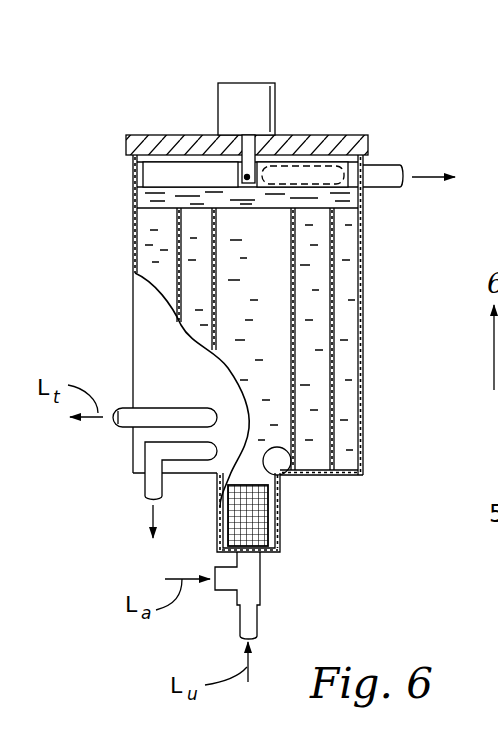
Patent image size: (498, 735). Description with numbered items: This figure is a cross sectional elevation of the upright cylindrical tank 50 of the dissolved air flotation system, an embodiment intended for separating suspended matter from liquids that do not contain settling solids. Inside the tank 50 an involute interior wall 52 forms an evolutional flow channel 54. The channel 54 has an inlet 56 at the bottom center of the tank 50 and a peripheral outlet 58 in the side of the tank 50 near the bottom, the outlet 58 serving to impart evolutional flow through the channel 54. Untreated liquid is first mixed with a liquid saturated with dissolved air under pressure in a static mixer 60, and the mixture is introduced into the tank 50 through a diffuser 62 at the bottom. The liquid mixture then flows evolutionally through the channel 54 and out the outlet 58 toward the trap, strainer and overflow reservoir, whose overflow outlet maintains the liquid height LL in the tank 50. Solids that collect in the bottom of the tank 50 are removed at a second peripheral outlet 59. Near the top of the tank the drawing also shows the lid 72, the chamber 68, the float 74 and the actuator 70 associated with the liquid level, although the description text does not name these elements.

The tank 50 is at (134, 232).
The involute interior wall 52 is at (333, 248).
The evolutional flow channel 54 is at (318, 325).
The inlet 56 is at (290, 468).
The peripheral outlet 58 is at (168, 410).
The peripheral outlet 59 is at (155, 455).
The static mixer 60 is at (255, 582).
The diffuser 62 is at (268, 508).
The float chamber 68 is at (163, 168).
The valve actuator 70 is at (232, 121).
The lid 72 is at (200, 138).
The float 74 is at (317, 163).
The liquid height LL is at (333, 195).